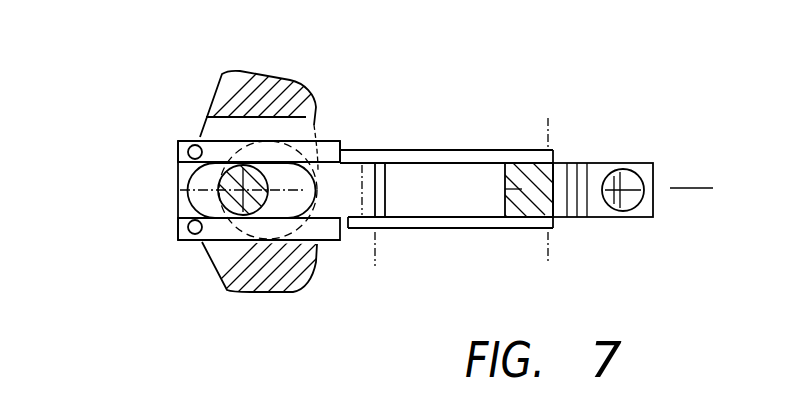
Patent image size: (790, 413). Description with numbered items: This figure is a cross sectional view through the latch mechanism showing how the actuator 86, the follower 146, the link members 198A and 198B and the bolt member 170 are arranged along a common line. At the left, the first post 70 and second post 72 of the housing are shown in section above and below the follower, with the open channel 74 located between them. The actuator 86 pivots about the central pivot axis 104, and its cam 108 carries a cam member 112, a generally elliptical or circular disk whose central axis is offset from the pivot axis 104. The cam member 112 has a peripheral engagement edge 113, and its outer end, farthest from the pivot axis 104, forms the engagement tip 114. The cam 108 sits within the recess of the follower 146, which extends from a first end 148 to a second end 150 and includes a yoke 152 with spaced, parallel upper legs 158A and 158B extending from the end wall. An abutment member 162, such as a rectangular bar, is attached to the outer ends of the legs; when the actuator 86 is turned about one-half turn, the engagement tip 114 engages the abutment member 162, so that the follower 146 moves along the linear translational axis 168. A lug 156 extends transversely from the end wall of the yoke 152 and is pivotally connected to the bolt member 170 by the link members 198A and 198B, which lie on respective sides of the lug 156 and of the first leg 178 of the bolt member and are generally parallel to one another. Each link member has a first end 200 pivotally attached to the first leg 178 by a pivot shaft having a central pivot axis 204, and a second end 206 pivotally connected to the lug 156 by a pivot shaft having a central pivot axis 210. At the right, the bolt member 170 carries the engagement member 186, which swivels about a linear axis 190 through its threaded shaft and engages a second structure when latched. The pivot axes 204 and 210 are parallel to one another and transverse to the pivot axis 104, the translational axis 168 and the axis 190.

The first post 70 is at (255, 283).
The second post 72 is at (258, 92).
The open channel 74 is at (248, 132).
The actuator 86 is at (195, 186).
The central pivot axis 104 is at (195, 207).
The cam 108 is at (282, 247).
The cam member 112 is at (300, 204).
The peripheral engagement edge 113 is at (309, 103).
The engagement tip 114 is at (336, 142).
The follower 146 is at (283, 207).
The first end 148 is at (386, 208).
The second end 150 is at (180, 243).
The yoke 152 is at (214, 255).
The lug 156 is at (390, 192).
The upper leg 158A is at (178, 143).
The upper leg 158B is at (183, 242).
The abutment member 162 is at (218, 202).
The linear translational axis 168 is at (703, 188).
The bolt member 170 is at (620, 163).
The first leg 178 is at (508, 185).
The engagement member 186 is at (640, 178).
The linear axis 190 is at (622, 200).
The link member 198A is at (448, 228).
The link member 198B is at (448, 152).
The first end 200 is at (553, 153).
The central pivot axis 204 is at (548, 118).
The second end 206 is at (352, 158).
The central pivot axis 210 is at (375, 150).